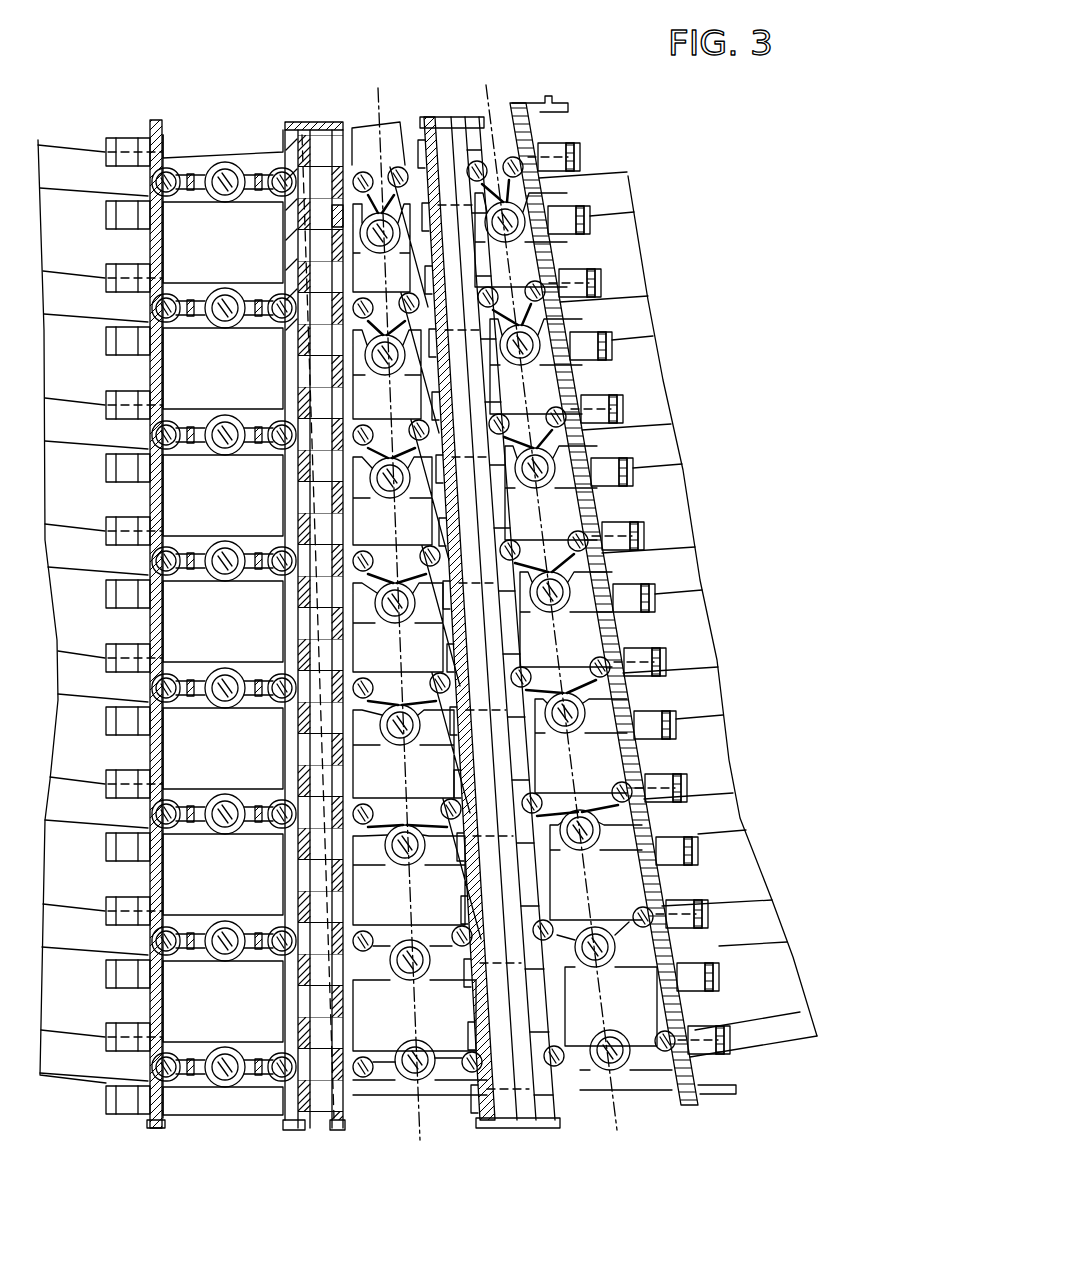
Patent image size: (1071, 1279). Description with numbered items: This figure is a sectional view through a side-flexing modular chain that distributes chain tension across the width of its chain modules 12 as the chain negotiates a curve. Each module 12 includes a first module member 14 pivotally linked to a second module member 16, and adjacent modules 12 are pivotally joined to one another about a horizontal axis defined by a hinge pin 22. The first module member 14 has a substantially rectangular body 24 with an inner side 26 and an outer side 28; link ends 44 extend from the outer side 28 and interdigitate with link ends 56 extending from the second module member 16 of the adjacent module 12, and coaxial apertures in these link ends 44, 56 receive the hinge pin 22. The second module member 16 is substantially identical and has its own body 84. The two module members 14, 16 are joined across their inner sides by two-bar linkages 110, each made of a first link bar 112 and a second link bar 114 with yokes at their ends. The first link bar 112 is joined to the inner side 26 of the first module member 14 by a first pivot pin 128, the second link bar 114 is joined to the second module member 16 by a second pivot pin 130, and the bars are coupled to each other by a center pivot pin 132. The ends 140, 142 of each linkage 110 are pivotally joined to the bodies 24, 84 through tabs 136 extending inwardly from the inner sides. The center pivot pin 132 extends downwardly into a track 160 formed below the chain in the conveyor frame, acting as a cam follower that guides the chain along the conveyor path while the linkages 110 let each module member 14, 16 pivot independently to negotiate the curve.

The chain module 12 is at (222, 122).
The first module member 14 is at (157, 112).
The second module member 16 is at (294, 110).
The hinge pin 22 is at (316, 133).
The body 24 is at (168, 206).
The inner side 26 is at (167, 394).
The outer side 28 is at (279, 392).
The link ends 44 is at (104, 176).
The link ends 56 is at (338, 177).
The body 84 is at (285, 216).
The two-bar linkage 110 is at (223, 220).
The first link bar 112 is at (196, 320).
The second link bar 114 is at (245, 300).
The first pivot pin 128 is at (177, 572).
The second pivot pin 130 is at (268, 572).
The center pivot pin 132 is at (230, 547).
The tabs 136 is at (184, 810).
The linkage end 140 is at (183, 842).
The linkage end 142 is at (265, 842).
The track 160 is at (708, 795).